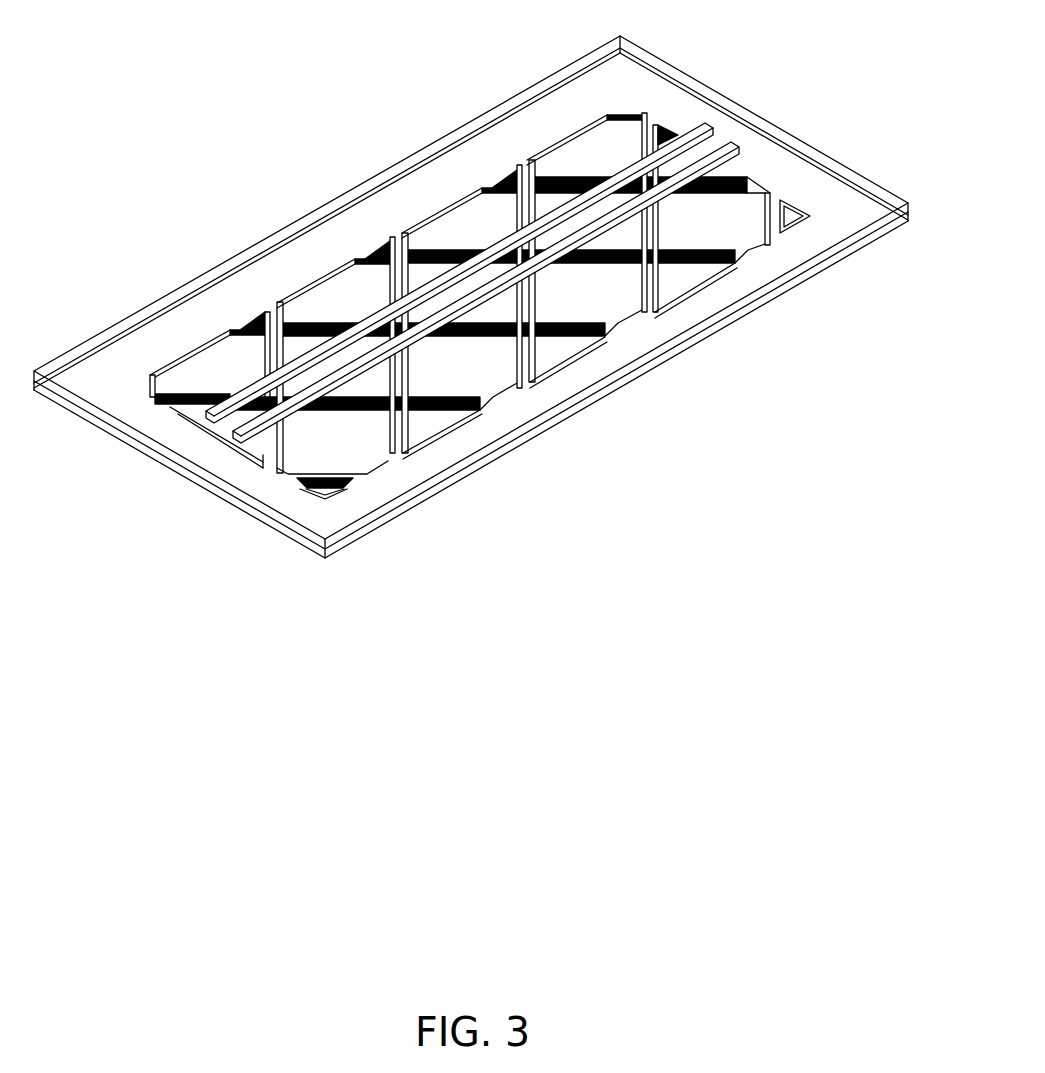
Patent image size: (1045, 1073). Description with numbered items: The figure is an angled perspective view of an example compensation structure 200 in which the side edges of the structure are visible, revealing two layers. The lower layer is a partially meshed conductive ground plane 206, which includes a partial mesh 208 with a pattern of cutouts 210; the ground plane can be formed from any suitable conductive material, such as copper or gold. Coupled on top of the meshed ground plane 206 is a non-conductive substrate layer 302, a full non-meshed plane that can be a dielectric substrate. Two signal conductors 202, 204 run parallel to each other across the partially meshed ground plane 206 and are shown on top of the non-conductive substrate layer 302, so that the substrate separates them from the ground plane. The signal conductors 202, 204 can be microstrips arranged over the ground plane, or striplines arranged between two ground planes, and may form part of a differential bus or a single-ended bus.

The compensation structure 200 is at (471, 511).
The signal conductor 202 is at (710, 120).
The signal conductor 204 is at (743, 133).
The partially meshed ground plane 206 is at (335, 547).
The partial mesh 208 is at (530, 350).
The cutouts 210 is at (465, 226).
The non-conductive substrate layer 302 is at (395, 500).